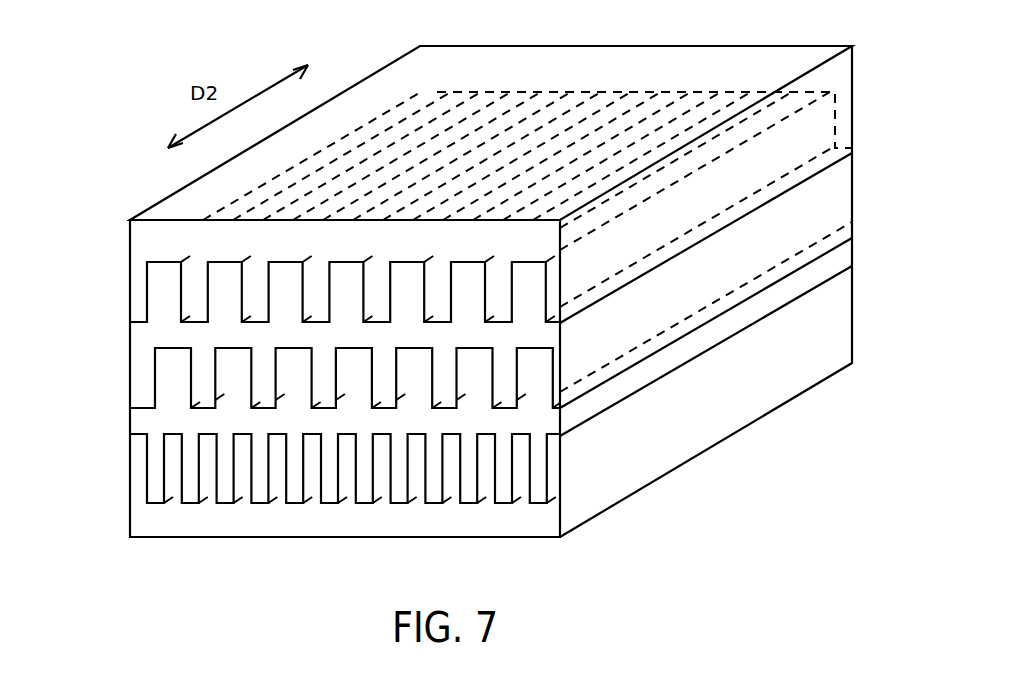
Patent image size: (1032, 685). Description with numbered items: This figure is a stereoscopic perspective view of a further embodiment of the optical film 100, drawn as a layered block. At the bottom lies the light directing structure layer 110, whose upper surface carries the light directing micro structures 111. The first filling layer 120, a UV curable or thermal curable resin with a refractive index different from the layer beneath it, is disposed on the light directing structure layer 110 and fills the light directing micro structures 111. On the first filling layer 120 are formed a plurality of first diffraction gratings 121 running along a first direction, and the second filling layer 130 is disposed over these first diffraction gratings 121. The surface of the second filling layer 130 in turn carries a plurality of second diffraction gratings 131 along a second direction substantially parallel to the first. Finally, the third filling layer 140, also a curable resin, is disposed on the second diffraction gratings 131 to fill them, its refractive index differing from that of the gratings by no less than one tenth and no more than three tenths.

The optical film 100 is at (160, 27).
The third filling layer 140 is at (155, 237).
The second filling layer 130 is at (150, 338).
The second diffraction gratings 131 is at (515, 288).
The first filling layer 120 is at (143, 416).
The first diffraction gratings 121 is at (535, 373).
The light directing structure layer 110 is at (153, 520).
The light directing micro structures 111 is at (550, 468).